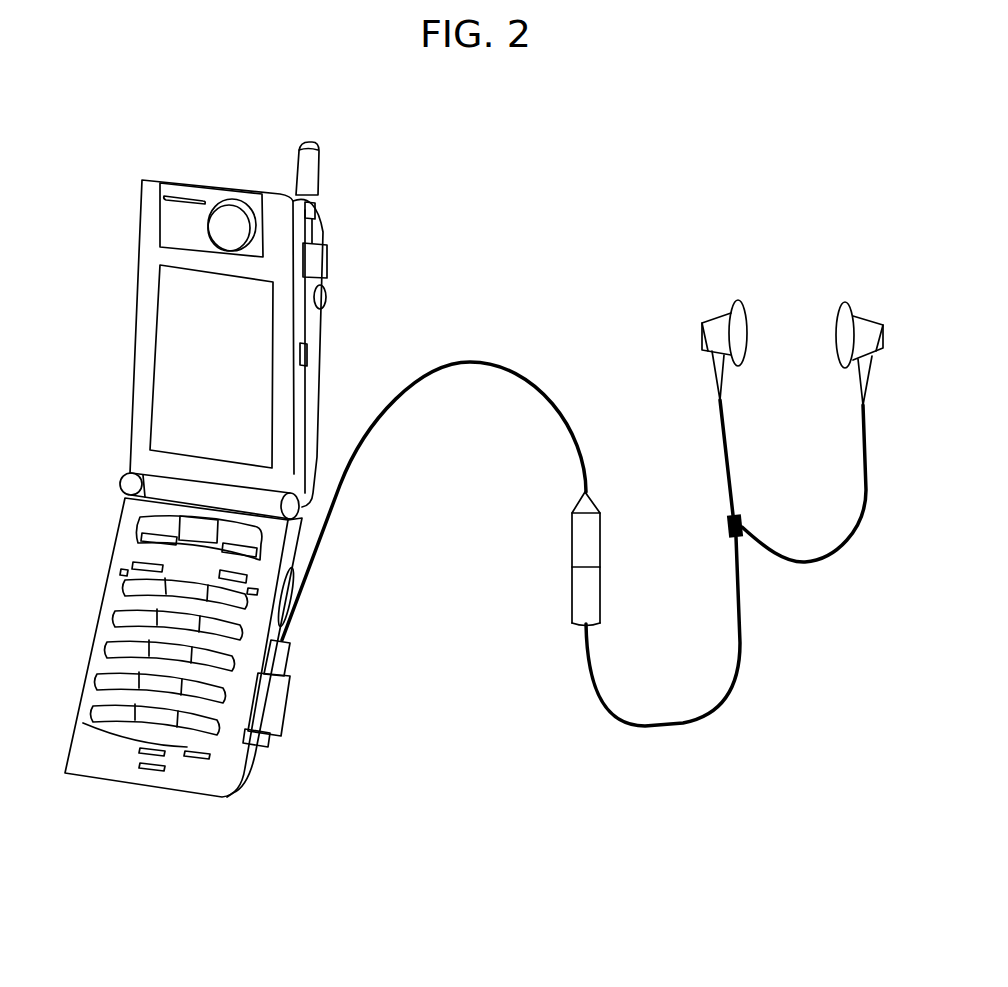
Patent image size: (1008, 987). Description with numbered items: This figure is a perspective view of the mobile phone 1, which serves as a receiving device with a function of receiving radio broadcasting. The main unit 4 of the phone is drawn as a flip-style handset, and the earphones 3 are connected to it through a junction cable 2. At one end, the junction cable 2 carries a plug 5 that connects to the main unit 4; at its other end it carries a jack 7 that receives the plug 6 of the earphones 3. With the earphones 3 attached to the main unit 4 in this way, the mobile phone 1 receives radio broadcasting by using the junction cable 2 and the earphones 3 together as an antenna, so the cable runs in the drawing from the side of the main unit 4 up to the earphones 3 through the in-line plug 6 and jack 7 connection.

The mobile phone 1 is at (113, 895).
The junction cable 2 is at (489, 362).
The earphones 3 is at (718, 693).
The main unit 4 is at (191, 797).
The plug 5 is at (282, 695).
The plug 6 is at (602, 592).
The jack 7 is at (602, 541).